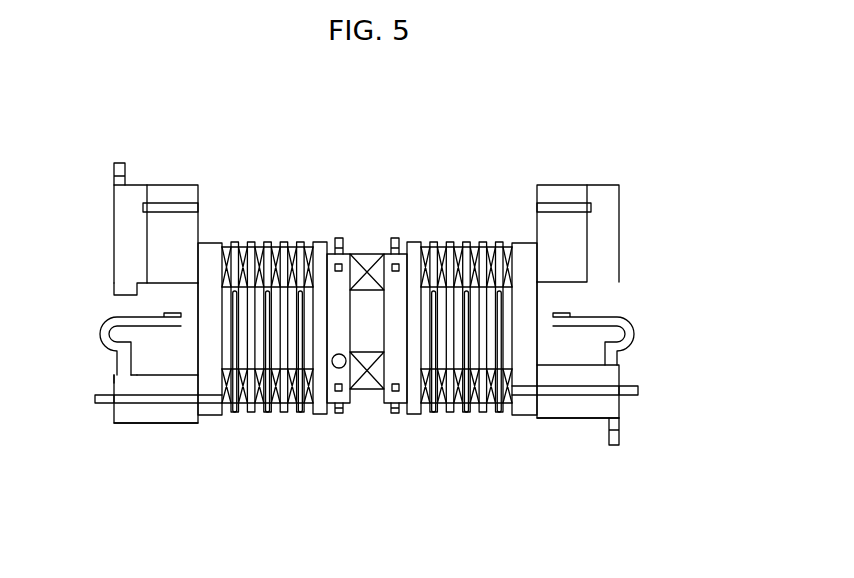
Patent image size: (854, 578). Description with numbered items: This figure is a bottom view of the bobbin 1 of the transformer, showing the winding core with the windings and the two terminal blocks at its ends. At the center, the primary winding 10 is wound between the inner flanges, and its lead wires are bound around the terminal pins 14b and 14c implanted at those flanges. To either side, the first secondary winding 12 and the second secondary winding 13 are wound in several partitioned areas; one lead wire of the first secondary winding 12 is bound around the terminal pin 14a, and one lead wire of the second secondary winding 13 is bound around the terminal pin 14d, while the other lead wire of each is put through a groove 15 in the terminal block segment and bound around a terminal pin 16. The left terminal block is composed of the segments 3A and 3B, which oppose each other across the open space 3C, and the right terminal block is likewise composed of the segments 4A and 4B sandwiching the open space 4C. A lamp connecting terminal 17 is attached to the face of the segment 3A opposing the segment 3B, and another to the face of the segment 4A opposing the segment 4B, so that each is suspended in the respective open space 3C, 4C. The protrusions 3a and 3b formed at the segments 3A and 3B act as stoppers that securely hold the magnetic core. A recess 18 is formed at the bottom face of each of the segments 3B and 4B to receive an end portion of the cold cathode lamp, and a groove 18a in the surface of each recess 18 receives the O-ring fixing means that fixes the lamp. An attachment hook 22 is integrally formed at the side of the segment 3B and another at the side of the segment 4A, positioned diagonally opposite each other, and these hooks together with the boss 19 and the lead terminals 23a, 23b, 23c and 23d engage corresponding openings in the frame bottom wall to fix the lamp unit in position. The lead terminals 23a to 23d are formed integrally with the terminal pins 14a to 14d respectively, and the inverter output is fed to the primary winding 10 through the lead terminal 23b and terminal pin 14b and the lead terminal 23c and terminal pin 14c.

The bobbin 1 is at (690, 169).
The segment 3A is at (113, 383).
The segment 3B is at (127, 218).
The open space 3C is at (163, 299).
The protrusion 3a is at (113, 365).
The protrusion 3b is at (112, 290).
The segment 4A is at (618, 370).
The segment 4B is at (607, 217).
The open space 4C is at (568, 295).
The primary winding 10 is at (362, 262).
The first secondary winding 12 is at (260, 243).
The second secondary winding 13 is at (475, 243).
The terminal pin 14a is at (338, 414).
The terminal pin 14b is at (338, 238).
The terminal pin 14c is at (396, 414).
The terminal pin 14d is at (396, 238).
The groove 15 is at (158, 400).
The terminal pin 16 is at (103, 407).
The lamp connecting terminal 17 is at (98, 338).
The recess 18 is at (158, 242).
The groove 18a is at (172, 208).
The boss 19 is at (345, 367).
The attachment hook 22 is at (121, 163).
The lead terminal 23a is at (333, 389).
The lead terminal 23b is at (333, 266).
The lead terminal 23c is at (401, 389).
The lead terminal 23d is at (401, 266).